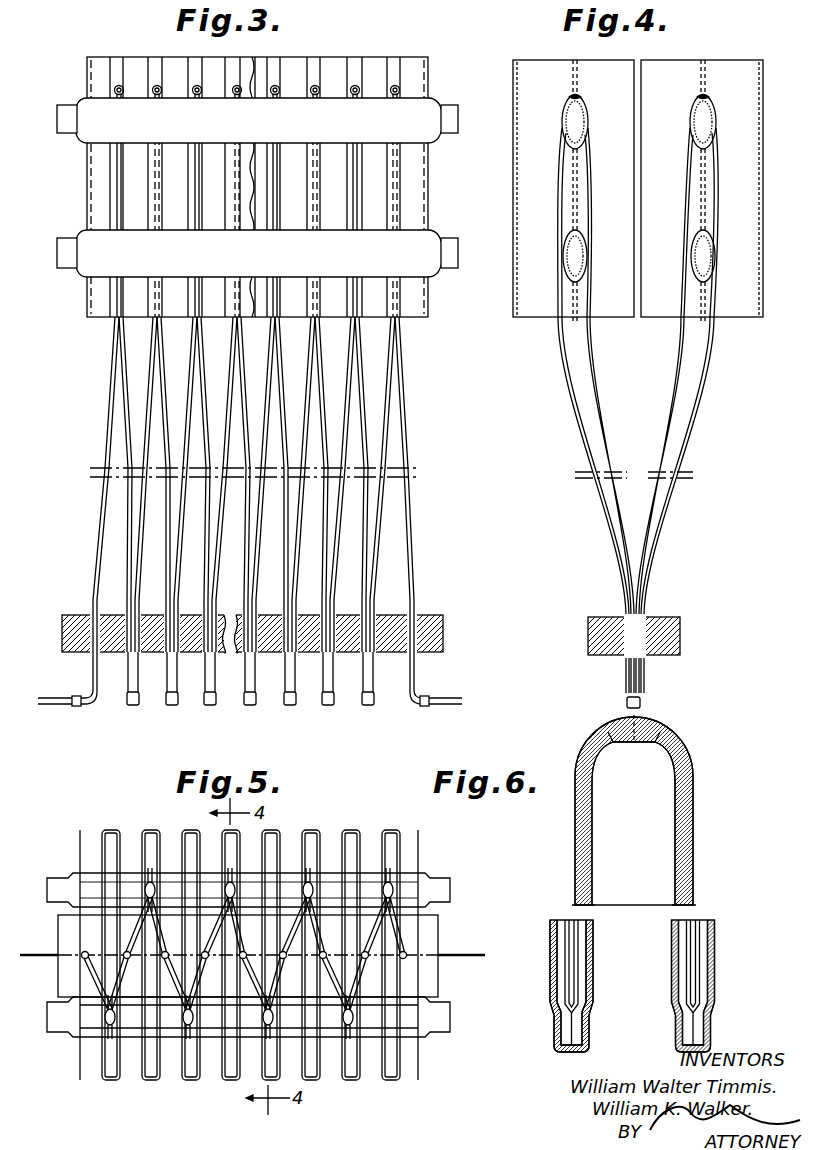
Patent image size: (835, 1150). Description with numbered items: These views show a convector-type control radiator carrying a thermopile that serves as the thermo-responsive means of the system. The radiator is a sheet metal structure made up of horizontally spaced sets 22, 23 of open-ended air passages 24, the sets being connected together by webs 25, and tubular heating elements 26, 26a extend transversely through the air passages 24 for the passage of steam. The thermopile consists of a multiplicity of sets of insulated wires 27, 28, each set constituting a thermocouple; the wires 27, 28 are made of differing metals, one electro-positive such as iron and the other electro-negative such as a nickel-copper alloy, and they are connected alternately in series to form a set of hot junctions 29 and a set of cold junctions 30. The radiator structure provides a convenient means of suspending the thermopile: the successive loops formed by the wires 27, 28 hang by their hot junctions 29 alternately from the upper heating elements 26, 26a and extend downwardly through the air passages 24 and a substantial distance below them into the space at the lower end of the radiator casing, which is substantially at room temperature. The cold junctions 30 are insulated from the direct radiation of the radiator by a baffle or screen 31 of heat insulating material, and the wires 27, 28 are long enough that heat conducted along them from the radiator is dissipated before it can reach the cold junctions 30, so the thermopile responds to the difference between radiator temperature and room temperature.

In FIG. 4, the set of open-ended air passages 22 is at (761, 310).
In FIG. 5, the set of open-ended air passages 22 is at (390, 832).
In FIG. 4, the set of open-ended air passages 23 is at (513, 300).
In FIG. 5, the set of open-ended air passages 23 is at (389, 1080).
In FIG. 4, the open-ended air passage 24 is at (718, 75).
In FIG. 5, the open-ended air passage 24 is at (308, 845).
In FIG. 5, the web 25 is at (325, 888).
In FIG. 3, the tubular heating element 26 is at (95, 107).
In FIG. 4, the tubular heating element 26 is at (580, 118).
In FIG. 5, the tubular heating element 26 is at (432, 1012).
In FIG. 4, the tubular heating element 26a is at (708, 118).
In FIG. 5, the tubular heating element 26a is at (435, 886).
In FIG. 3, the insulated wire 27 is at (148, 455).
In FIG. 4, the insulated wire 27 is at (572, 392).
In FIG. 3, the insulated wire 28 is at (126, 410).
In FIG. 4, the insulated wire 28 is at (674, 392).
In FIG. 3, the hot junction 29 is at (316, 88).
In FIG. 4, the hot junction 29 is at (572, 97).
In FIG. 6, the hot junction 29 is at (640, 735).
In FIG. 5, the hot junction 29 is at (148, 882).
In FIG. 3, the cold junction 30 is at (172, 706).
In FIG. 4, the cold junction 30 is at (627, 701).
In FIG. 6, the cold junction 30 is at (578, 1043).
In FIG. 3, the baffle 31 is at (72, 616).
In FIG. 4, the baffle 31 is at (590, 620).
In FIG. 5, the baffle 31 is at (62, 931).